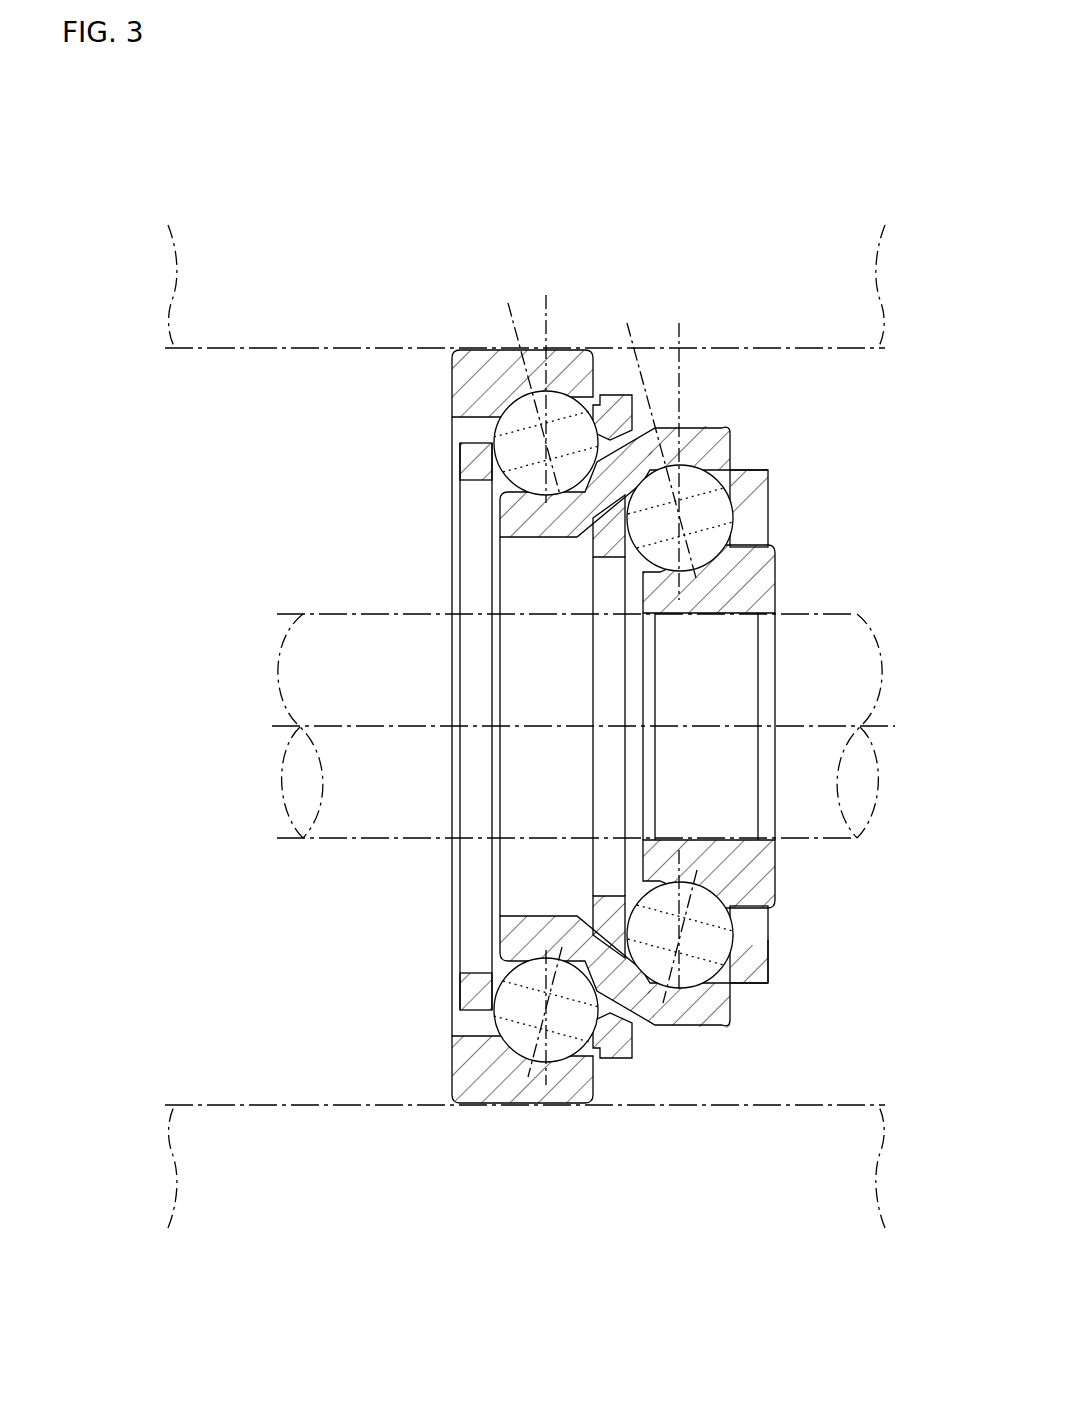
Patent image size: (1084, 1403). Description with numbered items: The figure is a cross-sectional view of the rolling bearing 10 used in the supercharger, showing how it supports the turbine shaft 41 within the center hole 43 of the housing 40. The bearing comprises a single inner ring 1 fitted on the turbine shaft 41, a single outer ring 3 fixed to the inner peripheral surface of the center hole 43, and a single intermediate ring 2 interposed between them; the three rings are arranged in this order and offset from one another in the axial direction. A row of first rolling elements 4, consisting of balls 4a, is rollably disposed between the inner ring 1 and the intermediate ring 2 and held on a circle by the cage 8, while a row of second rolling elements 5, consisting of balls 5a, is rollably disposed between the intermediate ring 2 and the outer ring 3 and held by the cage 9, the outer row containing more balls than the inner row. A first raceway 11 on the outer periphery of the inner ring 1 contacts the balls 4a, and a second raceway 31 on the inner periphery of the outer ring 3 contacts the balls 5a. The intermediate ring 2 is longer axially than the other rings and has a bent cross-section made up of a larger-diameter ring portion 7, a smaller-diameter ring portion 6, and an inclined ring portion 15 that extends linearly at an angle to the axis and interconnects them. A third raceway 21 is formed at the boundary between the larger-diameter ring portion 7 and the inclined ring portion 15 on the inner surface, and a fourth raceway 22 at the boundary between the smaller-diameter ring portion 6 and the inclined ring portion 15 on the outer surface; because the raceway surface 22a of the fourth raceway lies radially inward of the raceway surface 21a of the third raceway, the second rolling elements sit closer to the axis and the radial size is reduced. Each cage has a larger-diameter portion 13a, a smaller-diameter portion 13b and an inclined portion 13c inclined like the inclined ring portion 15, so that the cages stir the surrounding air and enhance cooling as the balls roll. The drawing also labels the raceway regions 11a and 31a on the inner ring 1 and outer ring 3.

The inner ring 1 is at (784, 580).
The intermediate ring 2 is at (698, 422).
The outer ring 3 is at (448, 386).
The first rolling elements 4 is at (770, 470).
The balls 4a is at (735, 917).
The second rolling elements 5 is at (488, 429).
The balls 5a is at (490, 1024).
The smaller-diameter ring portion 6 is at (503, 528).
The larger-diameter ring portion 7 is at (752, 438).
The cage 8 is at (768, 965).
The cage 9 is at (612, 1059).
The rolling bearing 10 is at (792, 1019).
The first raceway 11 is at (779, 560).
The inner raceway member 11a is at (776, 877).
The larger-diameter portion 13a is at (620, 1058).
The smaller-diameter portion 13b is at (493, 976).
The inclined portion 13c is at (568, 1058).
The inclined ring portion 15 is at (629, 395).
The third raceway 21 is at (733, 440).
The raceway surface 21a is at (700, 1028).
The fourth raceway 22 is at (503, 502).
The raceway surface 22a is at (503, 958).
The second raceway 31 is at (470, 351).
The flange of outer ring 31a is at (492, 1102).
The housing 40 is at (262, 1104).
The turbine shaft 41 is at (350, 612).
The center hole 43 is at (318, 905).